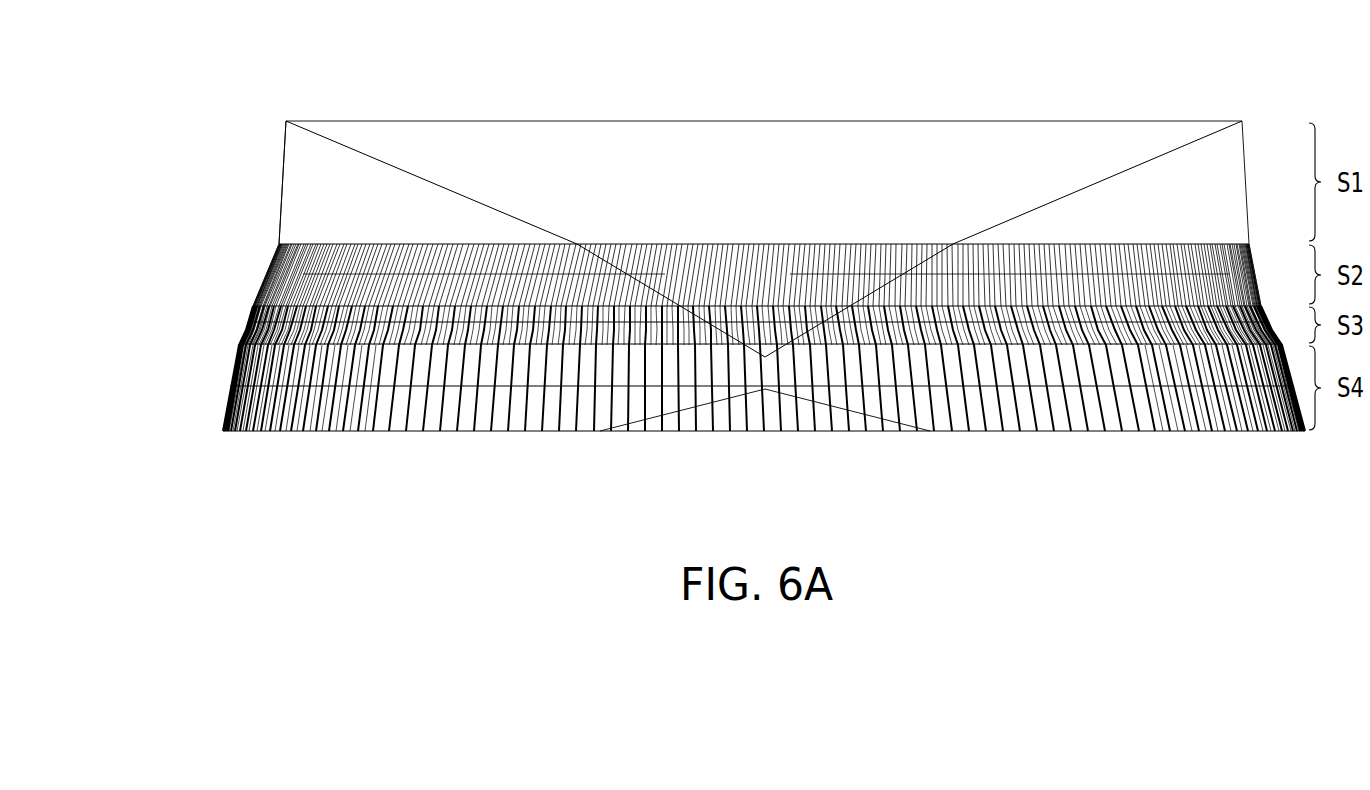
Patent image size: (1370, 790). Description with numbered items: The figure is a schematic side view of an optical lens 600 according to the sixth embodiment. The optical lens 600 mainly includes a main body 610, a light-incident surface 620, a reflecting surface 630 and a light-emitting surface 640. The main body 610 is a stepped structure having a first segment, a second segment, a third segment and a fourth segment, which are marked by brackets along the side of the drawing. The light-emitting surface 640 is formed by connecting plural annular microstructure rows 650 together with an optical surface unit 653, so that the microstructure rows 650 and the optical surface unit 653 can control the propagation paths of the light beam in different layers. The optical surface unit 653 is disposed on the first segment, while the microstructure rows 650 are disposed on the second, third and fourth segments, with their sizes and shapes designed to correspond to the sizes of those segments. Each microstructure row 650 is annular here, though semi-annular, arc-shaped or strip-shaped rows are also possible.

The optical lens 600 is at (189, 23).
The main body 610 is at (1203, 160).
The light-incident surface 620 is at (652, 430).
The reflecting surface 630 is at (1038, 215).
The light-emitting surface 640 is at (148, 182).
The microstructure rows 650 is at (440, 331).
The optical surface unit 653 is at (299, 194).